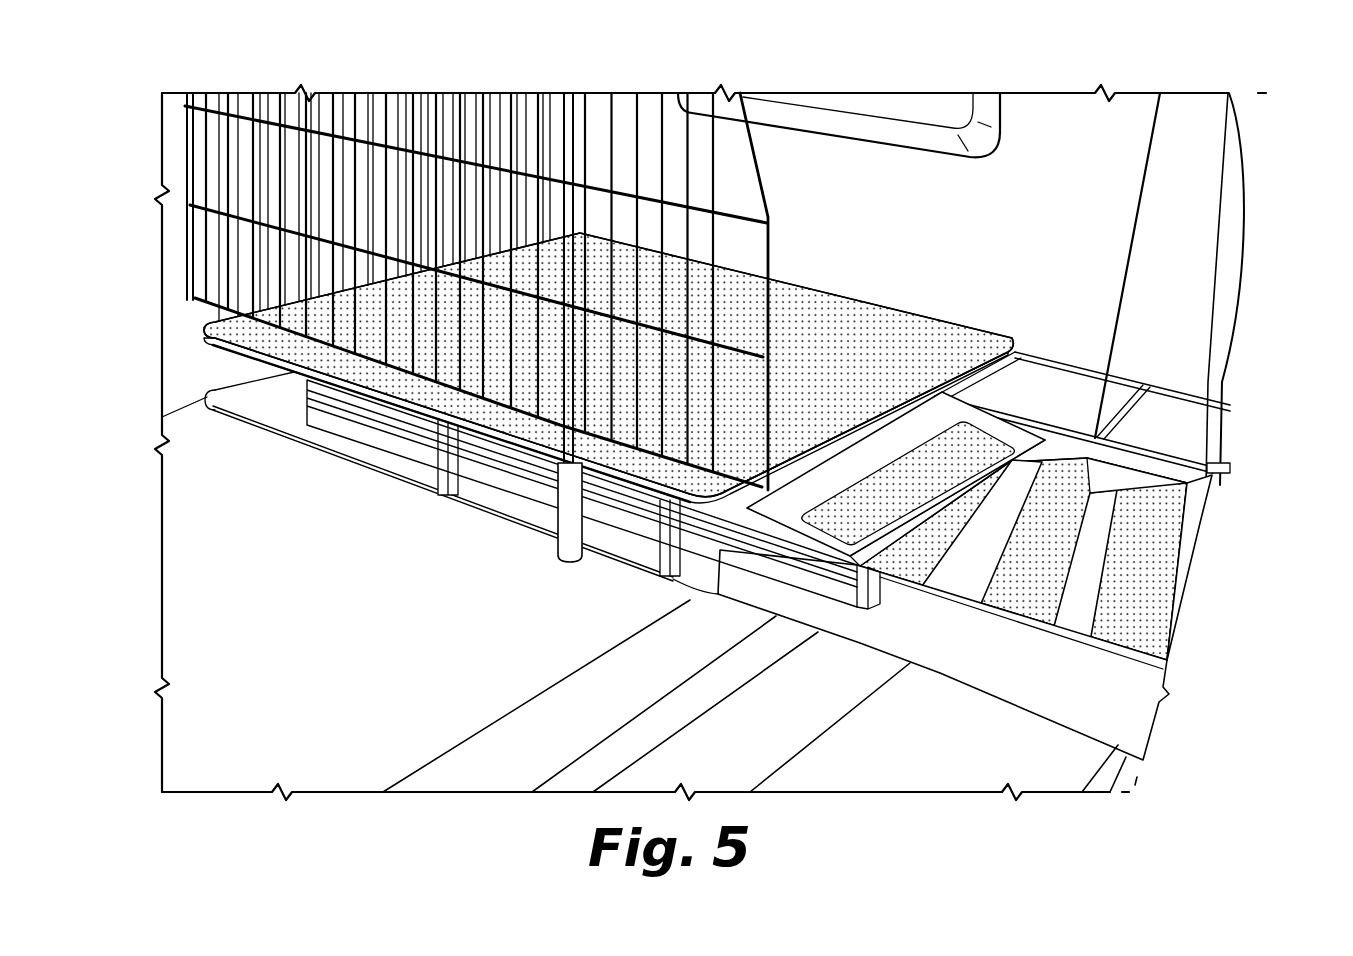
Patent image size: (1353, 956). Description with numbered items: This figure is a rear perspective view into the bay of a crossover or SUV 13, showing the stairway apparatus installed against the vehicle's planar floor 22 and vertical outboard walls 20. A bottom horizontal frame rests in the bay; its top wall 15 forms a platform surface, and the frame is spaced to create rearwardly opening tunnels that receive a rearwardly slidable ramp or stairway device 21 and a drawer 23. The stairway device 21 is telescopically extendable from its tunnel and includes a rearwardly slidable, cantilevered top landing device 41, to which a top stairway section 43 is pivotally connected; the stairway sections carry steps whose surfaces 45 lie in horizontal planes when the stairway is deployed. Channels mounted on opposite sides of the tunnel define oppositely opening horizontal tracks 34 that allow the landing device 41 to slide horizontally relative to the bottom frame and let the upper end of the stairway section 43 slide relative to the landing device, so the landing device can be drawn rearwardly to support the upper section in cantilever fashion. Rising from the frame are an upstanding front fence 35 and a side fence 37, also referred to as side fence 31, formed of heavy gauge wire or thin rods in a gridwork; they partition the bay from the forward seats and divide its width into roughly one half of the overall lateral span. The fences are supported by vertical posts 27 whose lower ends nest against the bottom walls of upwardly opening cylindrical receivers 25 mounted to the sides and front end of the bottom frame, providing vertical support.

The SUV 13 is at (1243, 270).
The top wall 15 is at (922, 347).
The vertical outboard walls 20 is at (1024, 237).
The stairway device 21 is at (965, 621).
The floor 22 is at (355, 642).
The drawer 23 is at (1054, 364).
The cylindrical receivers 25 is at (553, 505).
The vertical posts 27 is at (545, 440).
The side fence 31 is at (766, 191).
The horizontal tracks 34 is at (375, 428).
The front fence 35 is at (545, 316).
The side fence 37 is at (475, 316).
The top landing device 41 is at (778, 517).
The top stairway section 43 is at (978, 640).
The step surfaces 45 is at (1079, 560).